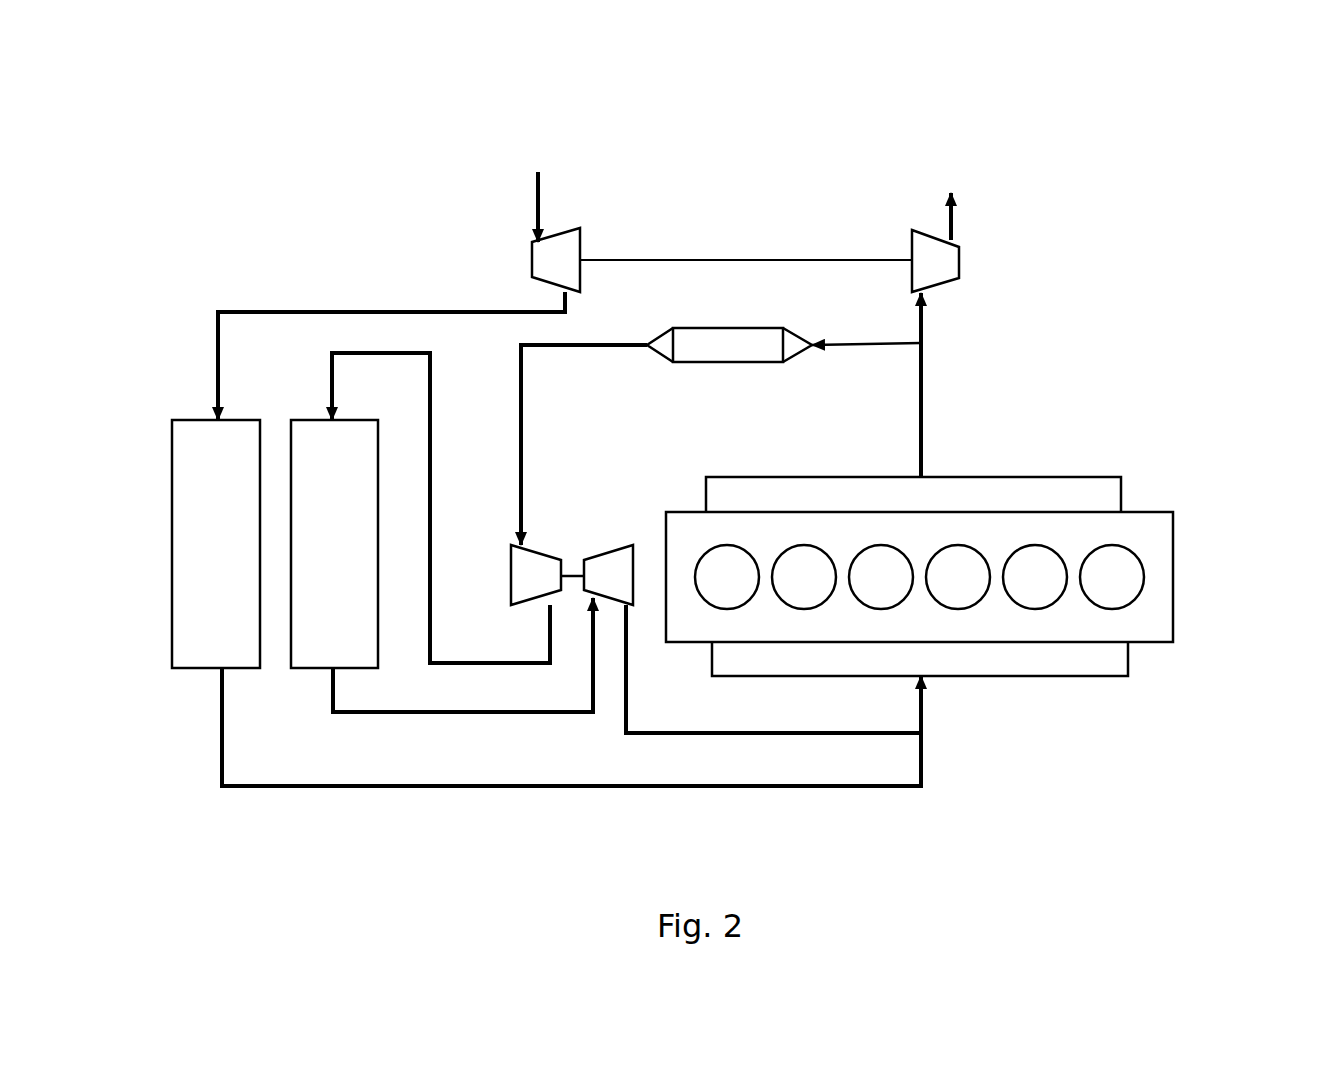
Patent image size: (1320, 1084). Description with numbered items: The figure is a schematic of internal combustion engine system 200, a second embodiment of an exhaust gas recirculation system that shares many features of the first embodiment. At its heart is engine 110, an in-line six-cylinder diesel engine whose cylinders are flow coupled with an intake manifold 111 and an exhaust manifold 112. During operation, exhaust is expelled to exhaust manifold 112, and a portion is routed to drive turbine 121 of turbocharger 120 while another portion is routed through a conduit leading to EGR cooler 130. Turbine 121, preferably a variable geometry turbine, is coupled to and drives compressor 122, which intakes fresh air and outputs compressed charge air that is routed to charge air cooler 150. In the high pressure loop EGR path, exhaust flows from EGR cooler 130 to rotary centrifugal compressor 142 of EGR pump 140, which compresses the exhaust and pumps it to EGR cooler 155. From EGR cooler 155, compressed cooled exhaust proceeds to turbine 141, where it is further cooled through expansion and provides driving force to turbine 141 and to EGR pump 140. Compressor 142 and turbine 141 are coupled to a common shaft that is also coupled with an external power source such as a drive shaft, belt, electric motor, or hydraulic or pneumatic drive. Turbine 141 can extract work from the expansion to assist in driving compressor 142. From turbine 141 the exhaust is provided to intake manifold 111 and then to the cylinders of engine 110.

The internal combustion engine system 200 is at (290, 130).
The engine 110 is at (1155, 575).
The intake manifold 111 is at (1105, 661).
The exhaust manifold 112 is at (1097, 496).
The turbocharger 120 is at (741, 256).
The turbine 121 is at (943, 265).
The compressor 122 is at (560, 253).
The EGR cooler 130 is at (695, 345).
The EGR pump 140 is at (571, 558).
The turbine 141 is at (610, 572).
The rotary centrifugal compressor 142 is at (533, 587).
The charge air cooler 150 is at (216, 544).
The EGR cooler 155 is at (334, 544).